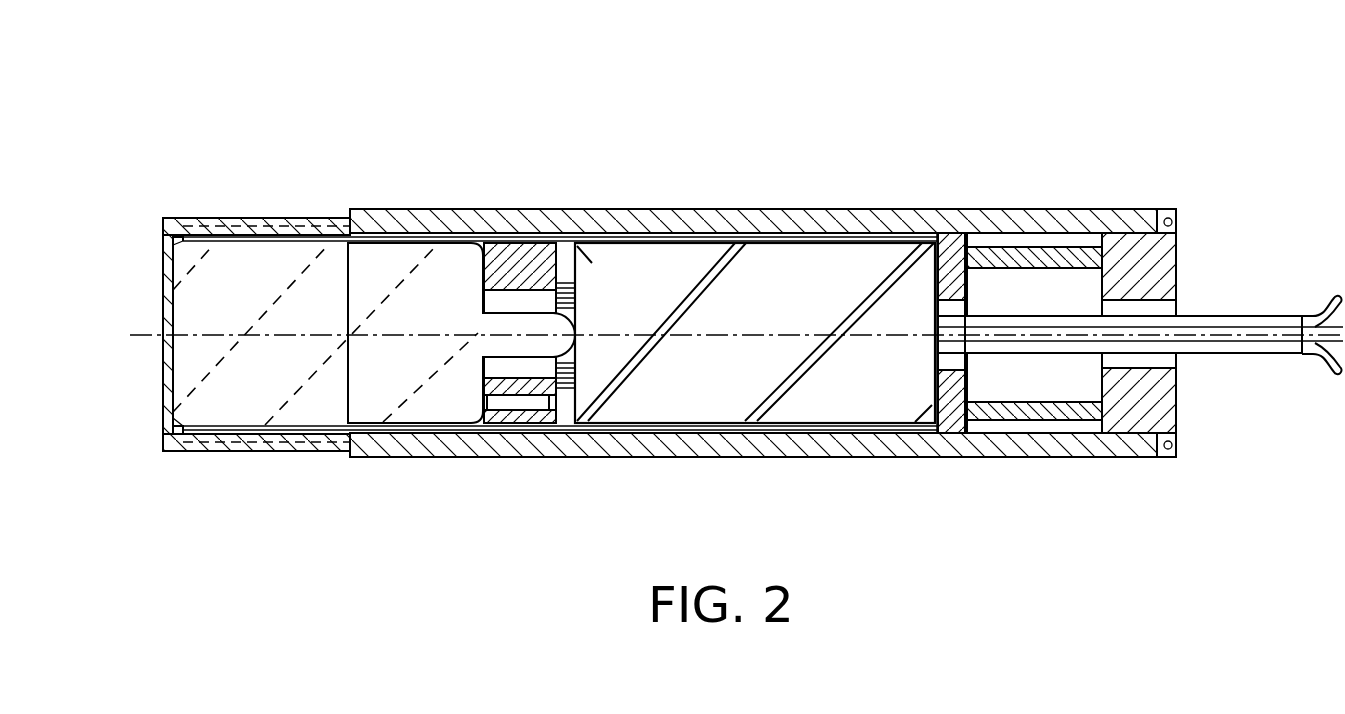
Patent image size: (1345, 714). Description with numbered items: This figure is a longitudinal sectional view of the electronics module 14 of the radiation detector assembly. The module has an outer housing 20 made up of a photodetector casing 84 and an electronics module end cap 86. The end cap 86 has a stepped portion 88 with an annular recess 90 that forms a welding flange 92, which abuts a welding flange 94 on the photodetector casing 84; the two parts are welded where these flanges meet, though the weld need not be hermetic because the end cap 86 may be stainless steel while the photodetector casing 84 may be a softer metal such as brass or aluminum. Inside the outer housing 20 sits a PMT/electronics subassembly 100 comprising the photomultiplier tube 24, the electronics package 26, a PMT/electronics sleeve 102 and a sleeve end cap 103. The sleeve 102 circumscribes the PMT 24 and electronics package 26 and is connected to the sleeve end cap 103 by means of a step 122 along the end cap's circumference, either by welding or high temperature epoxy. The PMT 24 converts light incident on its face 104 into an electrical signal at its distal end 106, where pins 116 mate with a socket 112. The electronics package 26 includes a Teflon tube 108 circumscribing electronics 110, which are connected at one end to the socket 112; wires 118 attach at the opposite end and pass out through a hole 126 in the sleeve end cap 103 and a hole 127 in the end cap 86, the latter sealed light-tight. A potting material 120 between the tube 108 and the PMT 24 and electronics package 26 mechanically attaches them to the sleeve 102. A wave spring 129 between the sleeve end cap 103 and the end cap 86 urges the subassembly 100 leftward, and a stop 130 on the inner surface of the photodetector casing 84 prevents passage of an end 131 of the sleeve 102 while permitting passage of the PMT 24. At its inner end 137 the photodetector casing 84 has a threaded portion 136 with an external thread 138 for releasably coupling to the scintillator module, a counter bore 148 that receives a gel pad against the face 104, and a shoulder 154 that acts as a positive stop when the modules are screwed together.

The electronics module 14 is at (313, 85).
The outer housing 20 is at (690, 167).
The photomultiplier tube 24 is at (364, 224).
The electronics package 26 is at (752, 232).
The photodetector casing 84 is at (836, 215).
The electronics module end cap 86 is at (1183, 382).
The stepped portion 88 is at (1157, 455).
The annular recess 90 is at (1176, 218).
The welding flange 92 is at (1178, 447).
The welding flange 94 is at (1170, 452).
The PMT/electronics subassembly 100 is at (590, 222).
The PMT/electronics sleeve 102 is at (385, 445).
The sleeve end cap 103 is at (937, 447).
The face 104 is at (173, 284).
The distal end 106 is at (448, 413).
The tube 108 is at (798, 427).
The electronics 110 is at (720, 402).
The socket 112 is at (508, 250).
The pins 116 is at (522, 405).
The wires 118 is at (1275, 318).
The potting material 120 is at (630, 420).
The step 122 is at (955, 245).
The hole 126 is at (972, 308).
The hole 127 is at (1182, 306).
The wave spring 129 is at (1033, 255).
The stop 130 is at (177, 422).
The end 131 is at (195, 445).
The threaded portion 136 is at (210, 200).
The inner end 137 is at (255, 510).
The external thread 138 is at (288, 217).
The counter bore 148 is at (108, 392).
The shoulder 154 is at (347, 453).